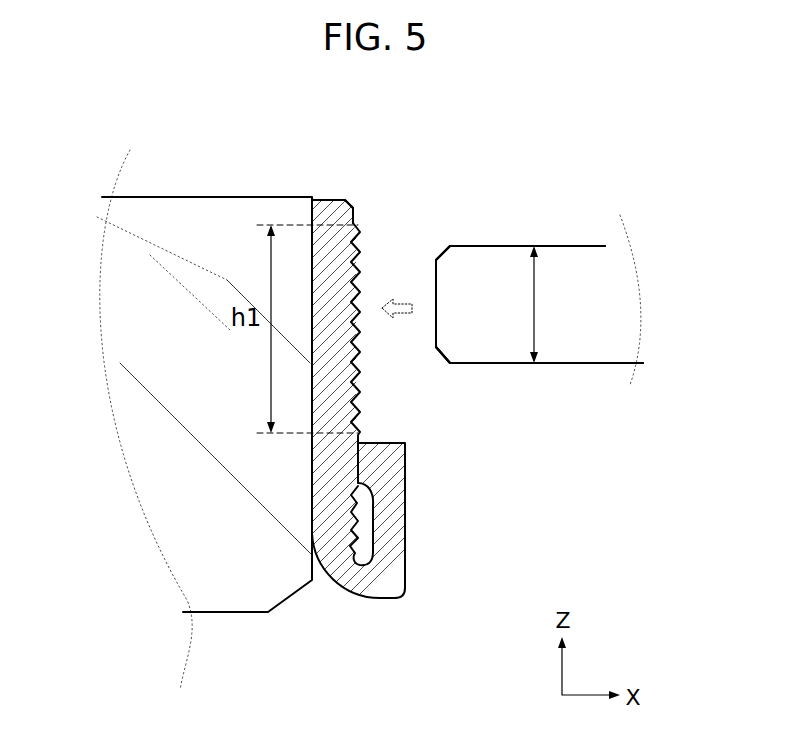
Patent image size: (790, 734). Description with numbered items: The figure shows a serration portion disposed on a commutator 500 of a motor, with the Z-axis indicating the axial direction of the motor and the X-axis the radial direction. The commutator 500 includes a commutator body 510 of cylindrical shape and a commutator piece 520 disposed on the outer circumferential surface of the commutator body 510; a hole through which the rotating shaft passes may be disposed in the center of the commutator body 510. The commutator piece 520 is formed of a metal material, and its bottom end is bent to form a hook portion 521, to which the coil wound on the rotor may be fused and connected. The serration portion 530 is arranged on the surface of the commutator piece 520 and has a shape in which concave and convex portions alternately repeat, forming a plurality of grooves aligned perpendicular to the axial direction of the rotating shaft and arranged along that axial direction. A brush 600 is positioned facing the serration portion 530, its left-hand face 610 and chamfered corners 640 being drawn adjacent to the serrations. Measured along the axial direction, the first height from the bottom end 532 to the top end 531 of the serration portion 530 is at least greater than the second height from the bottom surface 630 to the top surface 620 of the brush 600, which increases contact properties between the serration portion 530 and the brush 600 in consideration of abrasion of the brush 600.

The commutator 500 is at (78, 478).
The commutator body 510 is at (218, 578).
The commutator piece 520 is at (327, 482).
The hook portion 521 is at (390, 522).
The serration portion 530 is at (368, 239).
The top end 531 is at (360, 222).
The bottom end 532 is at (360, 433).
The brush 600 is at (636, 288).
The contact surface 610 is at (437, 340).
The top surface 620 is at (572, 246).
The bottom surface 630 is at (570, 364).
The chamfered corner 640 is at (443, 248).